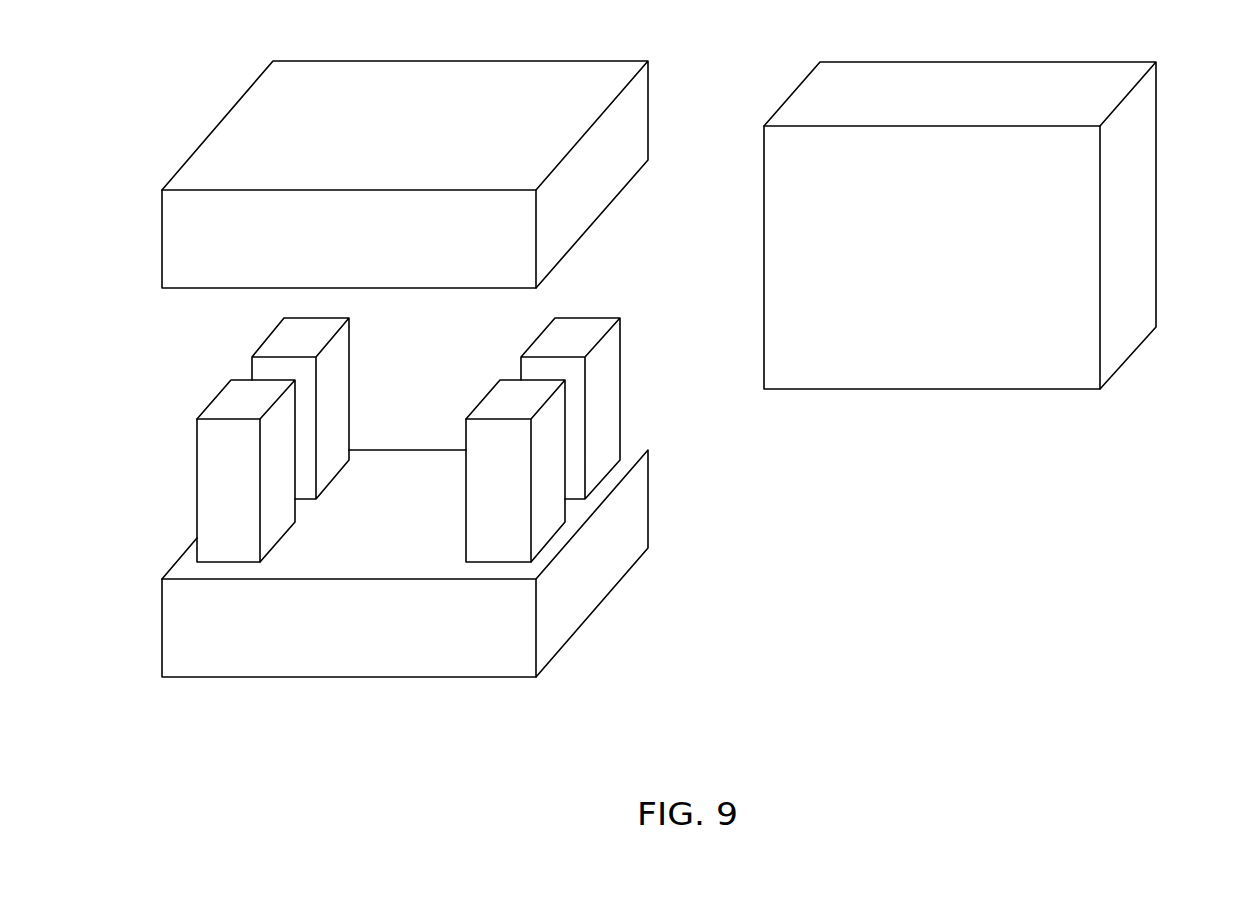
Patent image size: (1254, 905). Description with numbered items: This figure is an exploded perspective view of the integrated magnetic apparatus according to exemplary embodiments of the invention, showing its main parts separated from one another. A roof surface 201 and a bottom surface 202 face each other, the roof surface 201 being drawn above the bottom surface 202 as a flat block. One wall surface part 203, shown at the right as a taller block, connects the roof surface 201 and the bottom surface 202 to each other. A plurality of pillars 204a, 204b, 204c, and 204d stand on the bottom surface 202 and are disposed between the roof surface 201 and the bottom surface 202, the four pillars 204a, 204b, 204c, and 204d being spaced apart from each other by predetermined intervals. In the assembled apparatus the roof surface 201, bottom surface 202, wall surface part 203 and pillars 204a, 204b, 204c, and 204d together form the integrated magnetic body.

The roof surface 201 is at (642, 110).
The bottom surface 202 is at (640, 505).
The wall surface part 203 is at (1150, 110).
The pillar 204a is at (217, 452).
The pillar 204b is at (272, 348).
The pillar 204c is at (545, 517).
The pillar 204d is at (612, 382).